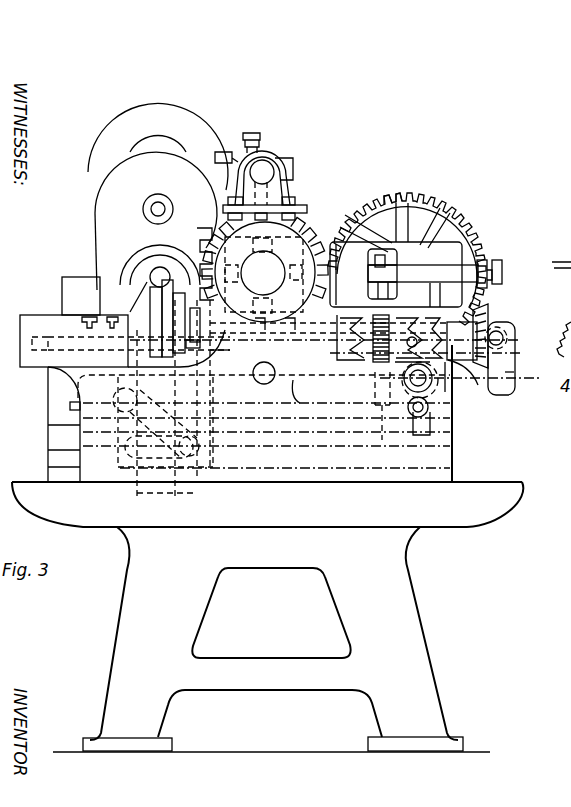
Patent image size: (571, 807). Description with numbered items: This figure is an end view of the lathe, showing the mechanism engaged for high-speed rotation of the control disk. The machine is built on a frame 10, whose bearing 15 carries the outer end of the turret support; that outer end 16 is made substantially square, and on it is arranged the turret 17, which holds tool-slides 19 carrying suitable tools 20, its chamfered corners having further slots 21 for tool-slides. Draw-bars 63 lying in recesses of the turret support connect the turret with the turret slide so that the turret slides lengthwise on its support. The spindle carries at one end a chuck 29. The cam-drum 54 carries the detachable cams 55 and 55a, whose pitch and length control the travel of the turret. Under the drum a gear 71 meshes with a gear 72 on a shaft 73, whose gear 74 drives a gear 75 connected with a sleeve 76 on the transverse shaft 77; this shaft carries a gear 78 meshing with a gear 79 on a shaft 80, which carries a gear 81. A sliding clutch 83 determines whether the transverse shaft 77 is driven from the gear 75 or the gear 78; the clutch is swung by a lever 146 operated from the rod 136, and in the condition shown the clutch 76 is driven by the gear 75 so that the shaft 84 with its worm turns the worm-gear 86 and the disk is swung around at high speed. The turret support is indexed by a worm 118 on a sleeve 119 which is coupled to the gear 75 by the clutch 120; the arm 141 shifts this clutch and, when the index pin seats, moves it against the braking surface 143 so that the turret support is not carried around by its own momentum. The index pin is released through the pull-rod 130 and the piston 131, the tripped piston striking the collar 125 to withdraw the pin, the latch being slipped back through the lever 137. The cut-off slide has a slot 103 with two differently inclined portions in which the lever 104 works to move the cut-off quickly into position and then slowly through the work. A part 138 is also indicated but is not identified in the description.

The frame 10 is at (401, 578).
The bearing 15 is at (293, 230).
The outer end of turret support 16 is at (156, 254).
The turret 17 is at (215, 225).
The tool-slides 19 is at (282, 163).
The tools 20 is at (257, 162).
The slots 21 is at (310, 220).
The chuck 29 is at (140, 262).
The cam-drum 54 is at (447, 220).
The cams 55 is at (418, 193).
The cam 55a is at (403, 180).
The draw-bars 63 is at (160, 256).
The gear 71 is at (433, 428).
The gear 72 is at (440, 390).
The shaft 73 is at (445, 398).
The gear 74 is at (386, 410).
The gear 75 is at (400, 335).
The sleeve 76 is at (388, 317).
The transverse shaft 77 is at (427, 322).
The gear 78 is at (486, 318).
The gear 79 is at (513, 340).
The shaft 80 is at (500, 334).
The gear 81 is at (537, 374).
The sliding clutch 83 is at (412, 305).
The shaft 84 is at (40, 337).
The worm-gear 86 is at (30, 350).
The slot 103 is at (130, 422).
The lever 104 is at (187, 437).
The worm 118 is at (246, 352).
The sleeve 119 is at (294, 352).
The clutch 120 is at (302, 398).
The collar 125 is at (498, 268).
The pull-rod 130 is at (408, 270).
The piston 131 is at (479, 262).
The rod 136 is at (258, 432).
The lever 137 is at (428, 412).
The bearing housing 138 is at (478, 390).
The arm 141 is at (365, 274).
The braking surface 143 is at (276, 319).
The lever 146 is at (407, 362).